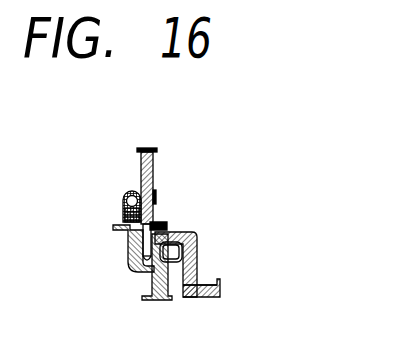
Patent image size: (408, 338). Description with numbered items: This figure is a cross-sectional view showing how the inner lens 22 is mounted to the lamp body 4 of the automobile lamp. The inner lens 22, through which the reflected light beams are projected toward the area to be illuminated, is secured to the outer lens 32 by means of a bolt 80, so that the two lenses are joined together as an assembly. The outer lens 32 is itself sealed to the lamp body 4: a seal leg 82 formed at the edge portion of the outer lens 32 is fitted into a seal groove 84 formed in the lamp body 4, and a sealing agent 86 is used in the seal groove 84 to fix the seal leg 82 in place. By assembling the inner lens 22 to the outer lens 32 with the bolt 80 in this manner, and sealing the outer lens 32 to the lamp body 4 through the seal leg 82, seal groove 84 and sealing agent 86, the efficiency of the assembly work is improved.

The lamp body 4 is at (140, 166).
The seal groove 84 is at (126, 190).
The seal leg 82 is at (122, 218).
The sealing agent 86 is at (153, 196).
The bolt 80 is at (160, 228).
The inner lens 22 is at (196, 262).
The outer lens 32 is at (150, 292).